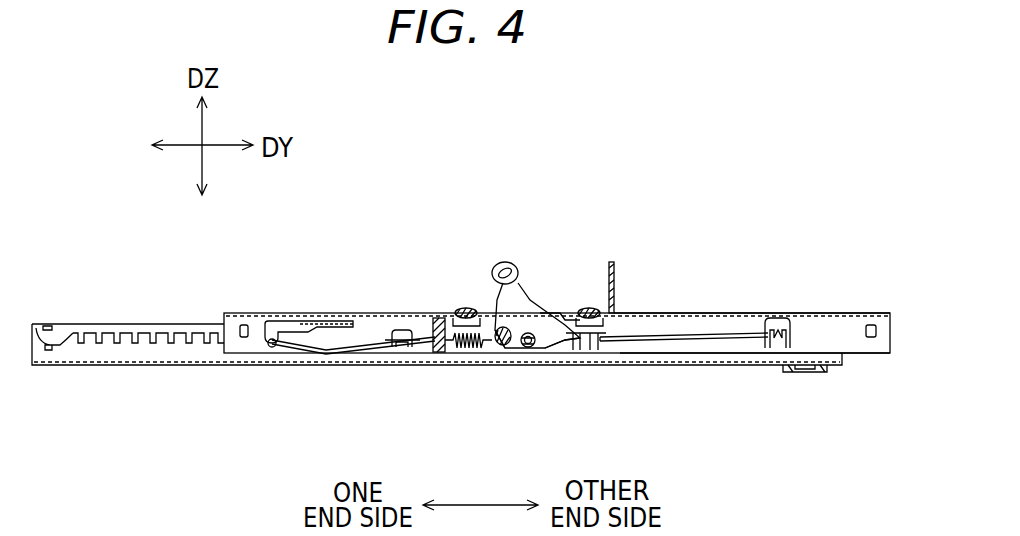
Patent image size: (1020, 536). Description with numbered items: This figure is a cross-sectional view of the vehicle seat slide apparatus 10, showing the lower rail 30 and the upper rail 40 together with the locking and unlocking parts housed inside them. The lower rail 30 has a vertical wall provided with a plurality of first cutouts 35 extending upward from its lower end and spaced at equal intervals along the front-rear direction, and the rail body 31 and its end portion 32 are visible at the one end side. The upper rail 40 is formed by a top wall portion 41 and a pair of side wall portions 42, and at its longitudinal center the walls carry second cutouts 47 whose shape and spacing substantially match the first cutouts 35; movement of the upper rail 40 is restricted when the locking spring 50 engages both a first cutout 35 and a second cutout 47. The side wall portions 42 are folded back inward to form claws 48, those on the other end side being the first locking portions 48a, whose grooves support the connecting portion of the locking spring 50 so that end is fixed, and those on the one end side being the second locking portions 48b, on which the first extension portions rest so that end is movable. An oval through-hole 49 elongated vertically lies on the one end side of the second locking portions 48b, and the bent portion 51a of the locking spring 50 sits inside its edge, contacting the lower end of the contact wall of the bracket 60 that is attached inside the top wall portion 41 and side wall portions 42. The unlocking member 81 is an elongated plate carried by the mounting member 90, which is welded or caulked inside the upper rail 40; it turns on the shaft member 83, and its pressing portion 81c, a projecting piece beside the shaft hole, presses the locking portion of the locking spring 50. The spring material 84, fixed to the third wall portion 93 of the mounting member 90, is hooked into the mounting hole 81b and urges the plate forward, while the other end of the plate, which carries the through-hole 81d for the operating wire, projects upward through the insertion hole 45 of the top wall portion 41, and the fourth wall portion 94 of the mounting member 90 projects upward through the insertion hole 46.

The slide rail device 10 is at (812, 258).
The lower rail 30 is at (115, 322).
The lower rail 31 is at (165, 360).
The stopper 32 is at (55, 358).
The first cutout 35 is at (116, 357).
The upper rail 40 is at (388, 312).
The top wall portion 41 is at (651, 312).
The side wall portion 42 is at (743, 328).
The insertion hole 45 is at (470, 310).
The insertion hole 46 is at (602, 315).
The second cutout 47 is at (597, 352).
The claw 48 is at (596, 384).
The first locking portion 48a is at (778, 350).
The second locking portion 48b is at (403, 355).
The through-hole 49 is at (270, 355).
The locking spring 50 is at (706, 340).
The bent portion 51a is at (258, 320).
The bracket 60 is at (330, 320).
The unlocking member 81 is at (522, 283).
The mounting hole 81b is at (500, 352).
The pressing portion 81c is at (578, 352).
The through-hole 81d is at (500, 268).
The shaft member 83 is at (530, 352).
The spring material 84 is at (475, 355).
The mounting member 90 is at (555, 312).
The third wall portion 93 is at (437, 355).
The fourth wall portion 94 is at (616, 262).